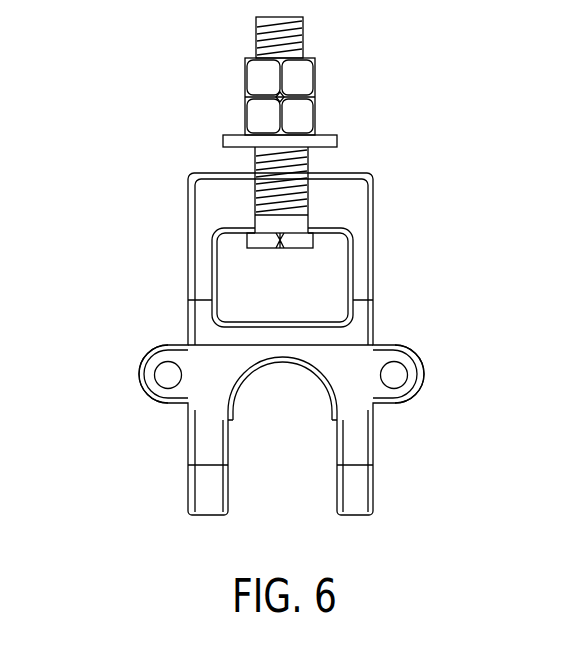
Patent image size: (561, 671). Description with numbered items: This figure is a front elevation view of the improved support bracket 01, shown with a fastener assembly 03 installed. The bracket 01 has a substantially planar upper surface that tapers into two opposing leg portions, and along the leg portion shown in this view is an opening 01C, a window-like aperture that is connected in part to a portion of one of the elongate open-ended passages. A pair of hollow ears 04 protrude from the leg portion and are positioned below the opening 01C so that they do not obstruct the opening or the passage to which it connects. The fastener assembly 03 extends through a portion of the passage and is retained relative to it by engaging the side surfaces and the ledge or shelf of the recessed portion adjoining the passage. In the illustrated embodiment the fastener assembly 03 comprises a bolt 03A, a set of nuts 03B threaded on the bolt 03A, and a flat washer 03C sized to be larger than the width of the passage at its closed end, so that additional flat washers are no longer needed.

The improved support bracket 01 is at (123, 132).
The opening 01C is at (315, 287).
The fastener assembly 03 is at (417, 63).
The bolt 03A is at (303, 33).
The set of nuts 03B is at (260, 77).
The washer 03C is at (330, 140).
The hollow ears 04 is at (145, 362).